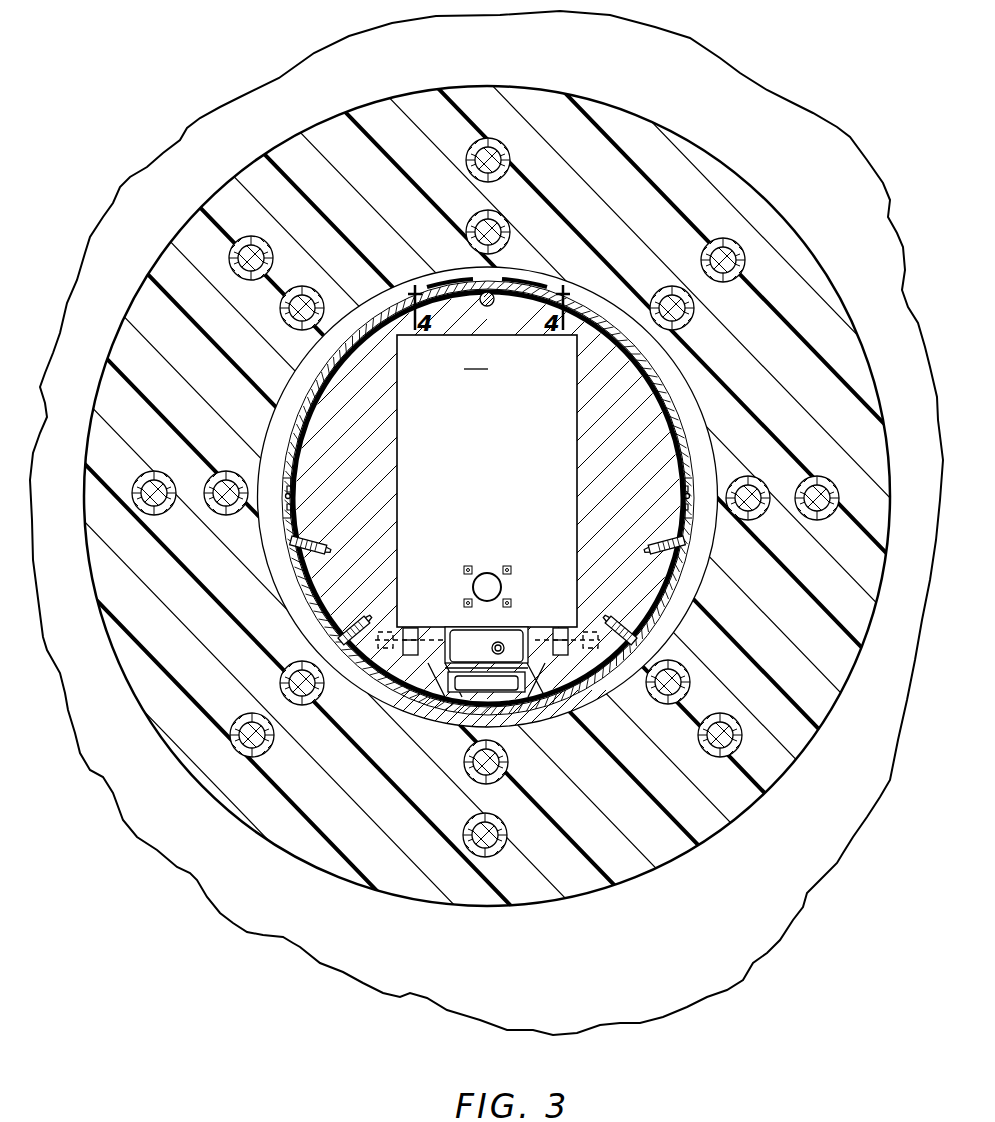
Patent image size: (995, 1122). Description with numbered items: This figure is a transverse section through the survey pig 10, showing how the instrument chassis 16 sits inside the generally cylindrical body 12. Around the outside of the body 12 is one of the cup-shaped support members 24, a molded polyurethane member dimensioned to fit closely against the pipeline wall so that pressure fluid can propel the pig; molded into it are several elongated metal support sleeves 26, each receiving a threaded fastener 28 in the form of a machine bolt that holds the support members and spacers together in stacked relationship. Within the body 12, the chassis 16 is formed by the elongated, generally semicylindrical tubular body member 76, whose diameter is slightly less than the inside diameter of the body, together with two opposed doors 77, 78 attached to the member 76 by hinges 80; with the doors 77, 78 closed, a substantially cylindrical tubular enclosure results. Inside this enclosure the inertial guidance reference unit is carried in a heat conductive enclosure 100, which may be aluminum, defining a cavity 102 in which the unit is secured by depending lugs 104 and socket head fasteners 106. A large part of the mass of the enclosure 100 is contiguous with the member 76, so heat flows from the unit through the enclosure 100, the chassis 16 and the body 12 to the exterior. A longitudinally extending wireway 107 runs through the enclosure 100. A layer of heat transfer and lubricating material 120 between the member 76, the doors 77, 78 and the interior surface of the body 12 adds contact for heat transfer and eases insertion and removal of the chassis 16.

The survey pig 10 is at (794, 66).
The body 12 is at (386, 716).
The instrument chassis 16 is at (605, 680).
The support member 24 is at (657, 28).
The support sleeve 26 is at (703, 254).
The threaded fastener 28 is at (694, 312).
The tubular body member 76 is at (472, 712).
The door 77 is at (413, 288).
The door 78 is at (522, 282).
The hinge 80 is at (702, 482).
The heat conductive enclosure 100 is at (650, 406).
The cavity 102 is at (401, 436).
The depending lug 104 is at (413, 628).
The socket head fastener 106 is at (388, 632).
The wireway 107 is at (510, 695).
The heat transfer and lubricating material 120 is at (682, 574).